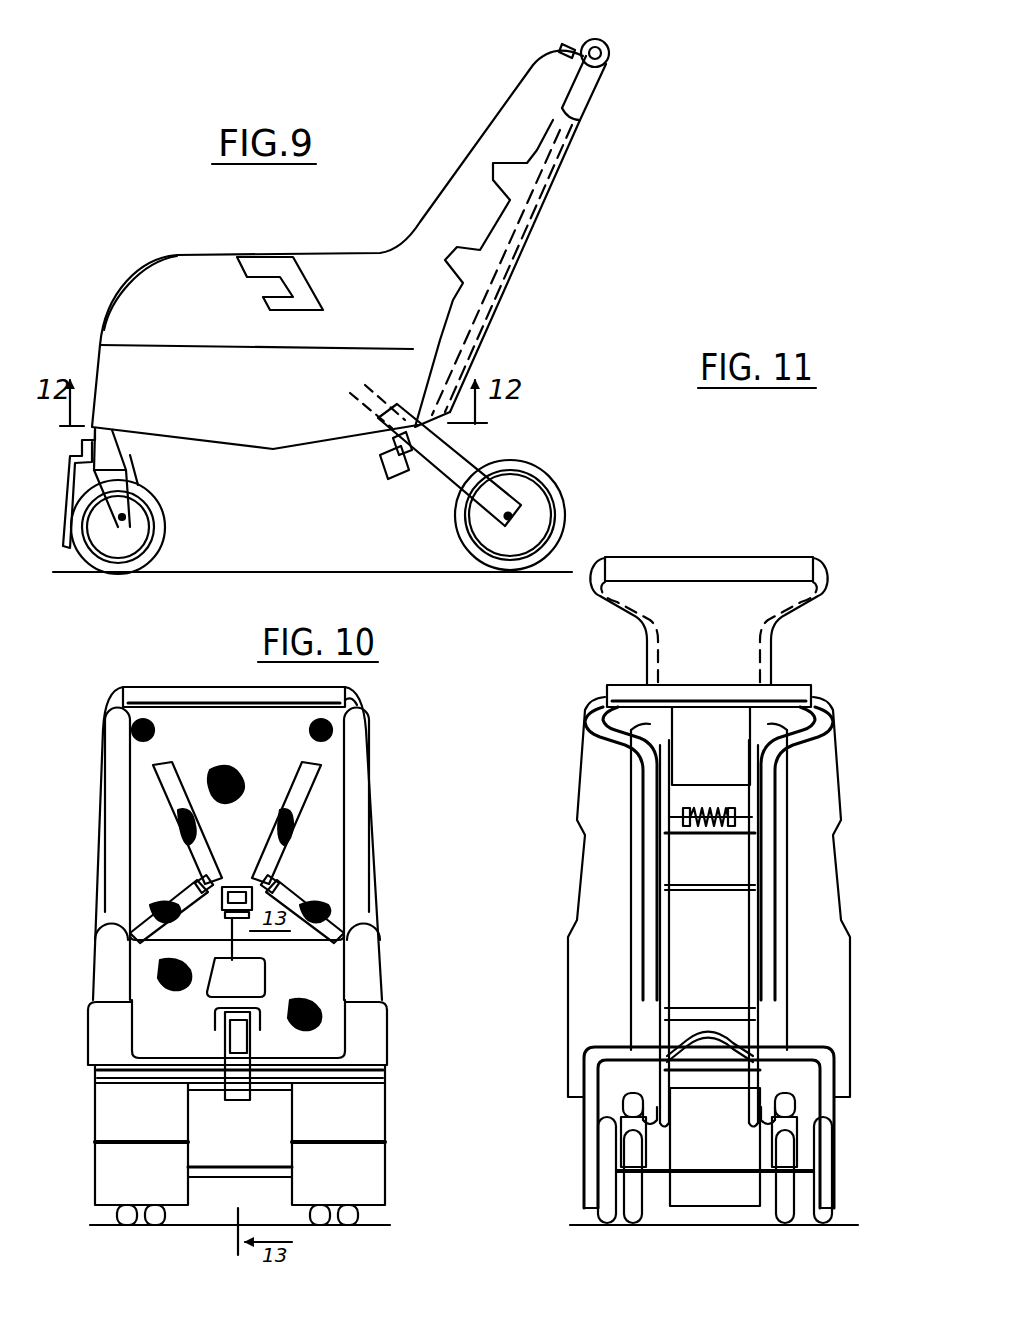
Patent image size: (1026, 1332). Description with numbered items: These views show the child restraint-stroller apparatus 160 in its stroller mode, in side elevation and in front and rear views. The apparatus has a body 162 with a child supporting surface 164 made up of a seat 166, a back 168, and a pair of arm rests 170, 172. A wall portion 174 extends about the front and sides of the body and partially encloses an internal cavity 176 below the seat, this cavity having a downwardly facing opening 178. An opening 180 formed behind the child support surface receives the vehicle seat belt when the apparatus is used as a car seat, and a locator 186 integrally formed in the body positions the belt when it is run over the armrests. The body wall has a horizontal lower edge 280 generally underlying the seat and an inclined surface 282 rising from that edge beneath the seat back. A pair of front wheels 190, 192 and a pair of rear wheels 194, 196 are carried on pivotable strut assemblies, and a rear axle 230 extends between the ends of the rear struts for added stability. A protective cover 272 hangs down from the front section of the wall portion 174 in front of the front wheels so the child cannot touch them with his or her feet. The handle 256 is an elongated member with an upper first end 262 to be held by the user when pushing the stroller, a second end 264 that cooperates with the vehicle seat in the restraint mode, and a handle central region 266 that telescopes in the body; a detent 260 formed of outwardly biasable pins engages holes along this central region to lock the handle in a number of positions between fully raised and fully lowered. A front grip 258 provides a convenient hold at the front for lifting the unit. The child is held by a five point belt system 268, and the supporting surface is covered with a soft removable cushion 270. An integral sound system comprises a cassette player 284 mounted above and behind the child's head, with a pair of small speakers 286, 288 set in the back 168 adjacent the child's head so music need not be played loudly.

In FIG. 9, the child restraint-stroller apparatus 160 is at (163, 236).
In FIG. 10, the child restraint-stroller apparatus 160 is at (378, 754).
In FIG. 9, the body 162 is at (126, 276).
In FIG. 10, the body 162 is at (375, 784).
In FIG. 10, the child supporting surface 164 is at (302, 858).
In FIG. 10, the seat 166 is at (313, 928).
In FIG. 10, the back 168 is at (318, 890).
In FIG. 10, the arm rest 170 is at (360, 932).
In FIG. 10, the arm rest 172 is at (108, 918).
In FIG. 9, the wall portion 174 is at (288, 428).
In FIG. 11, the internal cavity 176 is at (603, 1022).
In FIG. 9, the downwardly facing opening 178 is at (218, 452).
In FIG. 9, the opening 180 is at (457, 247).
In FIG. 9, the locator 186 is at (262, 285).
In FIG. 9, the front wheel 190 is at (92, 554).
In FIG. 10, the front wheel 190 is at (320, 1226).
In FIG. 10, the front wheel 192 is at (155, 1226).
In FIG. 9, the rear wheel 194 is at (508, 574).
In FIG. 10, the rear wheel 194 is at (348, 1226).
In FIG. 10, the rear wheel 196 is at (127, 1226).
In FIG. 10, the rear axle 230 is at (218, 1180).
In FIG. 11, the rear axle 230 is at (700, 1175).
In FIG. 11, the handle 256 is at (832, 578).
In FIG. 10, the front grip 258 is at (266, 985).
In FIG. 11, the detent 260 is at (705, 812).
In FIG. 11, the upper first end 262 is at (737, 556).
In FIG. 9, the second end 264 is at (397, 482).
In FIG. 11, the second end 264 is at (780, 1126).
In FIG. 11, the handle central region 266 is at (775, 668).
In FIG. 10, the five point belt system 268 is at (190, 848).
In FIG. 10, the cushion 270 is at (158, 1000).
In FIG. 9, the protective cover 272 is at (68, 498).
In FIG. 10, the protective cover 272 is at (350, 1125).
In FIG. 11, the protective cover 272 is at (592, 1190).
In FIG. 9, the horizontal lower edge 280 is at (253, 443).
In FIG. 9, the inclined surface 282 is at (353, 466).
In FIG. 9, the cassette player 284 is at (575, 47).
In FIG. 10, the cassette player 284 is at (207, 700).
In FIG. 11, the cassette player 284 is at (718, 726).
In FIG. 10, the speaker 286 is at (140, 740).
In FIG. 10, the speaker 288 is at (332, 722).